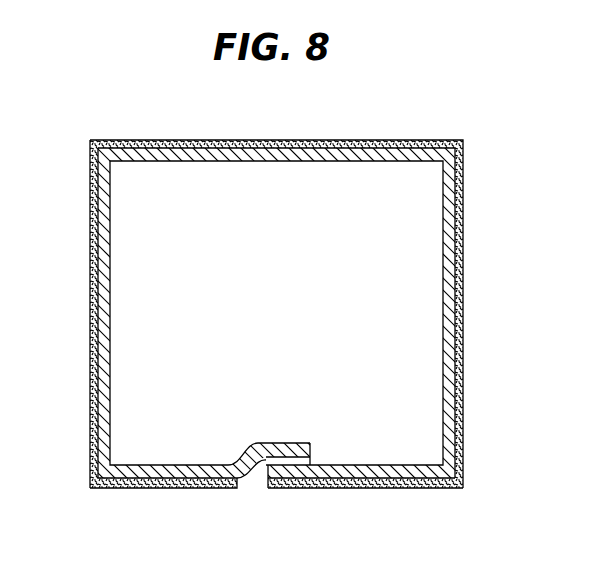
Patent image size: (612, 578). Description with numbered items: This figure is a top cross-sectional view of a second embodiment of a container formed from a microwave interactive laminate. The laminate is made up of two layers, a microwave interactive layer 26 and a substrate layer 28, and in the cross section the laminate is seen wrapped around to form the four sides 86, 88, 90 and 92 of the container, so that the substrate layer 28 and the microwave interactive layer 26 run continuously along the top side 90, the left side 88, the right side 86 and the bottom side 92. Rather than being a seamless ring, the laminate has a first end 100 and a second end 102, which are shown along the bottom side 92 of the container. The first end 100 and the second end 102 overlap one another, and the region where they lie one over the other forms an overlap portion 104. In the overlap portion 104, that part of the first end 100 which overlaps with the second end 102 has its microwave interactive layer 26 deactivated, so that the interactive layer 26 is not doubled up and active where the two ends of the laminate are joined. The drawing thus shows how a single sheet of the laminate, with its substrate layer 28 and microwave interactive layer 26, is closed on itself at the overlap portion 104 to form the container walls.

The side 90 is at (423, 140).
The side 88 is at (92, 302).
The side 86 is at (462, 316).
The substrate layer 28 is at (457, 426).
The microwave interactive layer 26 is at (202, 463).
The overlap portion 104 is at (312, 437).
The second end 102 is at (312, 455).
The first end 100 is at (293, 490).
The side 92 is at (166, 489).